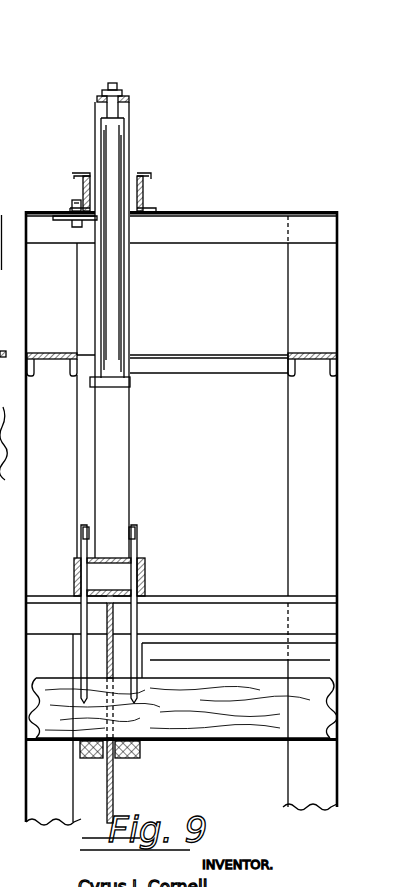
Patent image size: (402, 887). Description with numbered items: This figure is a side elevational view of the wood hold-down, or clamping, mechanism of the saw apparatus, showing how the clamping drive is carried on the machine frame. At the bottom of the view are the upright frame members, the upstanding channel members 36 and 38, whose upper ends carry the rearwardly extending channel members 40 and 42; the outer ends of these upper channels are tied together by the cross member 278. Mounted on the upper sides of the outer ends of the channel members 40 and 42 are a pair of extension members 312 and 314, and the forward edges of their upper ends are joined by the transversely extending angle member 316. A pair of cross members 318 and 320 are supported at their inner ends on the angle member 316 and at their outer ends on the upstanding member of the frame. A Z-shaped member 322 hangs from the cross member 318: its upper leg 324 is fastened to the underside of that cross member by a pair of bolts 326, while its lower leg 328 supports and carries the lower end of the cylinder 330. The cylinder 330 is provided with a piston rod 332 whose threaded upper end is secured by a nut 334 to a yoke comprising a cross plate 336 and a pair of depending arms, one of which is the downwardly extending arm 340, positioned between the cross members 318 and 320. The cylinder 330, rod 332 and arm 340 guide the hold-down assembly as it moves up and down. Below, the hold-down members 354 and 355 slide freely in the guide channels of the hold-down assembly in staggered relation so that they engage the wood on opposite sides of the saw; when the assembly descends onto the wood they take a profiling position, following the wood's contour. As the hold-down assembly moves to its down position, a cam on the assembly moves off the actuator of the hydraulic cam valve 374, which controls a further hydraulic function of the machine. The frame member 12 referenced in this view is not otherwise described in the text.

The wall 12 is at (2, 215).
The upstanding channel member 36 is at (4, 570).
The upstanding channel member 38 is at (305, 619).
The channel member 40 is at (302, 355).
The channel member 42 is at (37, 354).
The cross member 278 is at (5, 351).
The extension member 312 is at (56, 299).
The extension member 314 is at (308, 419).
The transversely extending angle member 316 is at (205, 238).
The cross member 318 is at (81, 173).
The cross member 320 is at (145, 175).
The Z-shaped member 322 is at (93, 292).
The upper leg 324 is at (64, 213).
The bolts 326 is at (74, 198).
The lower leg 328 is at (130, 386).
The cylinder 330 is at (115, 342).
The piston rod 332 is at (122, 112).
The nut 334 is at (121, 91).
The cross plate 336 is at (97, 96).
The downwardly extending arm 340 is at (95, 113).
The hold-down member 354 is at (78, 536).
The hold-down member 355 is at (140, 533).
The hydraulic cam valve 374 is at (13, 439).